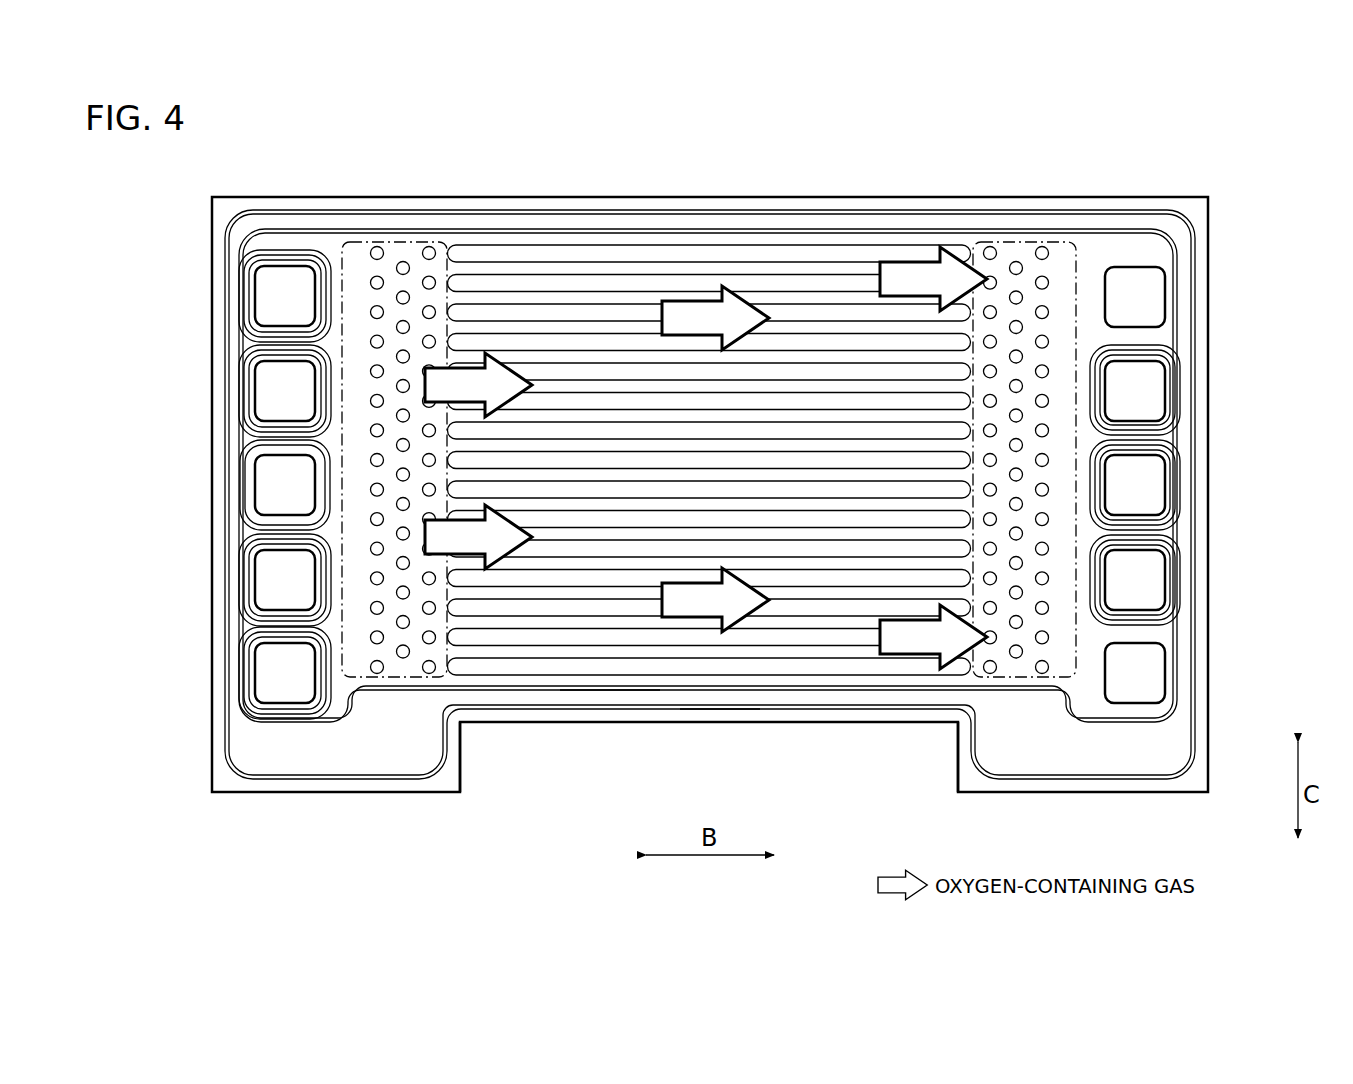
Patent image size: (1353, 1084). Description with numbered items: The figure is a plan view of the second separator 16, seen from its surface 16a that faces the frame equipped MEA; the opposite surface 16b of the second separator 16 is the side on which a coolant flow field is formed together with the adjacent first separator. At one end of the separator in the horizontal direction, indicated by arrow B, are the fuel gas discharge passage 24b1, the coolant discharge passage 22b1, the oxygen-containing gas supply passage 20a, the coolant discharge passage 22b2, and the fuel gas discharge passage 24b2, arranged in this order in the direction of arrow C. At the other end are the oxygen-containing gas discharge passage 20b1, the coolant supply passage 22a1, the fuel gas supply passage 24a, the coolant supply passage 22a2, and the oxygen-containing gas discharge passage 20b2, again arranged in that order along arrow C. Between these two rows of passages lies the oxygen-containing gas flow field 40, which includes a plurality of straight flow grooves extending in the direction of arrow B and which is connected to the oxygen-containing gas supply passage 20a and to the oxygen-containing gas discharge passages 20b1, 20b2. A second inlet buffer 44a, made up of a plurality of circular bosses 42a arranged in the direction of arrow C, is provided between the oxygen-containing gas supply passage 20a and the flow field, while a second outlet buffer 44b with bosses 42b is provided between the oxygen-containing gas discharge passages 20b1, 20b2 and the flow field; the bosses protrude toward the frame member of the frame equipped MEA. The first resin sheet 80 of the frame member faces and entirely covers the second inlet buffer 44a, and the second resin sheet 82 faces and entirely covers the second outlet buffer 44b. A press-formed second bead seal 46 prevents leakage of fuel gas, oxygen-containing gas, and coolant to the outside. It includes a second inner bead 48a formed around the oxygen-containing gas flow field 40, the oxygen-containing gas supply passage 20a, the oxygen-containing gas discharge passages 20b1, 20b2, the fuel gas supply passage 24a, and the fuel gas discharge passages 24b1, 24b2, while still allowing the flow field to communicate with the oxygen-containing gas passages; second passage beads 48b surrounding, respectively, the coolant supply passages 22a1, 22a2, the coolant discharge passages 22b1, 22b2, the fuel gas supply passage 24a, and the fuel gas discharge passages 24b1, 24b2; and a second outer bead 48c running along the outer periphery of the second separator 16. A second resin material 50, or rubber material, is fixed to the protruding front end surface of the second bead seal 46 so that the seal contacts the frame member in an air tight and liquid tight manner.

The second separator 16 is at (266, 157).
The surface 16a is at (978, 782).
The surface 16b is at (445, 778).
The oxygen-containing gas supply passage 20a is at (275, 481).
The oxygen-containing gas discharge passage 20b1 is at (1150, 290).
The oxygen-containing gas discharge passage 20b2 is at (1150, 680).
The coolant supply passage 22a1 is at (1150, 404).
The coolant supply passage 22a2 is at (1150, 578).
The coolant discharge passage 22b1 is at (277, 402).
The coolant discharge passage 22b2 is at (277, 596).
The fuel gas supply passage 24a is at (1150, 480).
The fuel gas discharge passage 24b1 is at (280, 304).
The fuel gas discharge passage 24b2 is at (275, 686).
The oxygen-containing gas flow field 40 is at (608, 298).
The bosses 42a is at (377, 246).
The bosses 42b is at (1043, 246).
The second inlet buffer 44a is at (414, 244).
The second outlet buffer 44b is at (1000, 244).
The second bead seal 46 is at (610, 698).
The second inner bead 48a is at (797, 688).
The second passage beads 48b is at (267, 258).
The second outer bead 48c is at (853, 707).
The second resin material 50 is at (718, 707).
The first resin sheet 80 is at (343, 252).
The second resin sheet 82 is at (1077, 255).